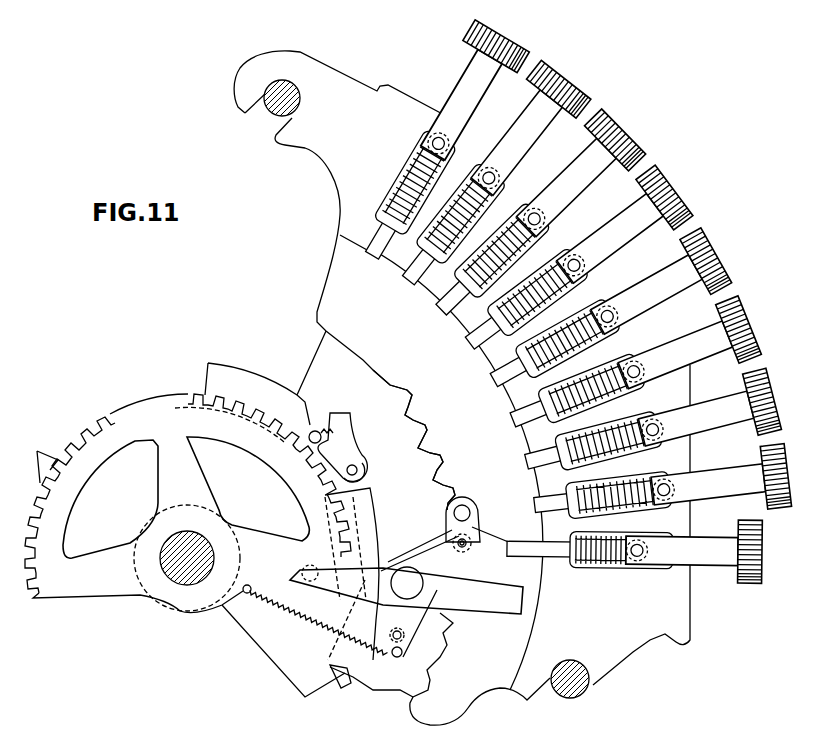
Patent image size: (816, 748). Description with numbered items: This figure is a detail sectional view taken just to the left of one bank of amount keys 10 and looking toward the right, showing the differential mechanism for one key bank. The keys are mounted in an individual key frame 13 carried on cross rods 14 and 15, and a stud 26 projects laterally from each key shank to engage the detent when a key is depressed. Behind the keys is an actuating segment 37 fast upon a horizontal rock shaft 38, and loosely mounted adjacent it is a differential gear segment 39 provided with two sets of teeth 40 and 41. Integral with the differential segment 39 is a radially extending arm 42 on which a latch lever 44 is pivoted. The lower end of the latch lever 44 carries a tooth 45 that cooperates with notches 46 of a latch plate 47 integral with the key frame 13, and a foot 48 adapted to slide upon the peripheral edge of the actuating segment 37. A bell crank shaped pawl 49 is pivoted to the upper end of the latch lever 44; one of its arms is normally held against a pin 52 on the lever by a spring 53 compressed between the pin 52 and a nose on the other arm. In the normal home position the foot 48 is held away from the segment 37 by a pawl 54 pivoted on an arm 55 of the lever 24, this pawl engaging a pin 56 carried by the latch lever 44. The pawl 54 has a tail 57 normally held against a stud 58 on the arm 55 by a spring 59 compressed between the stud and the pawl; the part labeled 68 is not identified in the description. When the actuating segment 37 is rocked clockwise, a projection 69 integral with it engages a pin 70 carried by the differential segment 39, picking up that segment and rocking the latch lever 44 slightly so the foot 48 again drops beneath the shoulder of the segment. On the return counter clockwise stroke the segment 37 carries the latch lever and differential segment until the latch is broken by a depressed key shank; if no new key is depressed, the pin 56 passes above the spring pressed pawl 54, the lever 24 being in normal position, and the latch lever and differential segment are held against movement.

The amount keys 10 is at (660, 173).
The key frame 13 is at (677, 622).
The cross rod 14 is at (268, 110).
The cross rod 15 is at (580, 695).
The lever 24 is at (325, 355).
The stud 26 is at (535, 213).
The actuating segment 37 is at (275, 630).
The horizontal rock shaft 38 is at (178, 580).
The differential gear segment 39 is at (67, 588).
The teeth 40 is at (41, 456).
The teeth 41 is at (340, 512).
The radially extending arm 42 is at (500, 605).
The latch lever 44 is at (433, 550).
The tooth 45 is at (410, 688).
The notches 46 is at (423, 427).
The latch plate 47 is at (335, 270).
The foot 48 is at (350, 678).
The bell crank shaped pawl 49 is at (472, 533).
The pin 52 is at (462, 548).
The spring 53 is at (480, 543).
The pawl 54 is at (342, 449).
The arm 55 is at (326, 404).
The pin 56 is at (402, 637).
The tail 57 is at (313, 449).
The stud 58 is at (307, 423).
The spring 59 is at (316, 430).
The spring 68 is at (306, 610).
The projection 69 is at (280, 578).
The pin 70 is at (312, 566).